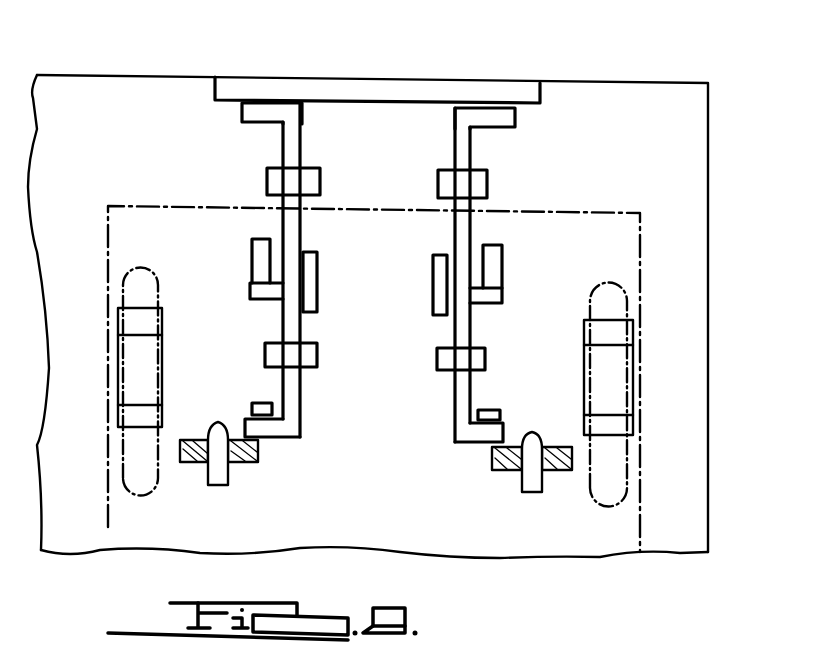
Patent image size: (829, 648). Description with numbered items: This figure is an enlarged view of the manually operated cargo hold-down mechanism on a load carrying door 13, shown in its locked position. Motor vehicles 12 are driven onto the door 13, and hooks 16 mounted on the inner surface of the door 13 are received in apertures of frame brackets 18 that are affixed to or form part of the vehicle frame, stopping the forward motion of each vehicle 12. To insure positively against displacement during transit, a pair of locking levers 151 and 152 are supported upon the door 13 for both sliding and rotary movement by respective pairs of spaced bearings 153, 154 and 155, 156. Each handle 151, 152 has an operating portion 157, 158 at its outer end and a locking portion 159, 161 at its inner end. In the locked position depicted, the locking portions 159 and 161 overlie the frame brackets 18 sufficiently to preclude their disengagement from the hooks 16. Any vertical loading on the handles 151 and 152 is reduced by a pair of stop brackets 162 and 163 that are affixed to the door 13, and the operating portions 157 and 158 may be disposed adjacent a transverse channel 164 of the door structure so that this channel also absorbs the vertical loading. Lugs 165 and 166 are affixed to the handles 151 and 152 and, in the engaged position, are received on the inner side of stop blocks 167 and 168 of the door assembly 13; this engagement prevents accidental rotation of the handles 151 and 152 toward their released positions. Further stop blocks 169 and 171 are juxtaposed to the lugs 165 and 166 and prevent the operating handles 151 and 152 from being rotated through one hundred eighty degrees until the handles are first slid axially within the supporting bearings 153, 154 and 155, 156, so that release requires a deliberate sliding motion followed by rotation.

The motor vehicle 12 is at (604, 216).
The load carrying door 13 is at (645, 131).
The hook 16 is at (205, 475).
The frame bracket 18 is at (196, 440).
The locking lever 151 is at (307, 120).
The locking lever 152 is at (448, 130).
The bearing 153 is at (318, 176).
The bearing 154 is at (317, 361).
The bearing 155 is at (485, 187).
The bearing 156 is at (483, 363).
The operating portion 157 is at (255, 108).
The operating portion 158 is at (495, 115).
The locking portion 159 is at (265, 435).
The locking portion 161 is at (500, 430).
The stop bracket 162 is at (257, 403).
The stop bracket 163 is at (492, 408).
The transverse channel 164 is at (230, 88).
The lug 165 is at (250, 290).
The lug 166 is at (498, 297).
The stop block 167 is at (253, 252).
The stop block 168 is at (497, 267).
The stop block 169 is at (320, 277).
The stop block 171 is at (442, 277).